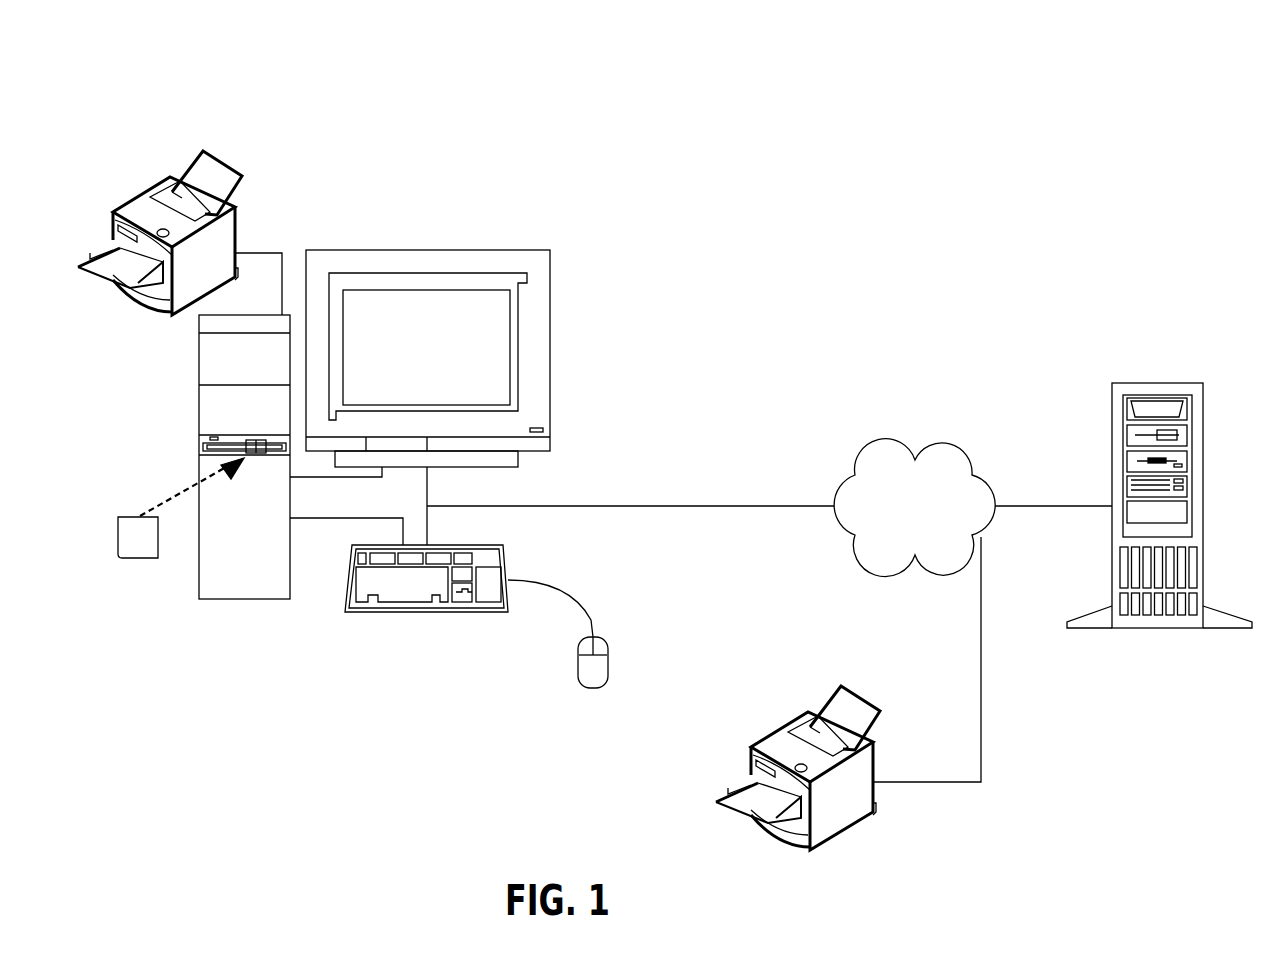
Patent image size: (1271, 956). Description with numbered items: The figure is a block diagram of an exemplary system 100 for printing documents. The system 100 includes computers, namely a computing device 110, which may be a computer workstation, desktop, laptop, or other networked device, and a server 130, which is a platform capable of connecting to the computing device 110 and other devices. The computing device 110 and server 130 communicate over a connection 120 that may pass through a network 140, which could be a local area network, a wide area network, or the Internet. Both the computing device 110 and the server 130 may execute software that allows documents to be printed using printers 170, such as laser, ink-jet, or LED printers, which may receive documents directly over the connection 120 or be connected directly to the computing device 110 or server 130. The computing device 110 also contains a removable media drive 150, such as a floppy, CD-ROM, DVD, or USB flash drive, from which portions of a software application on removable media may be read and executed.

The system 100 is at (259, 59).
The computing device 110 is at (427, 250).
The connection 120 is at (769, 629).
The server 130 is at (1158, 383).
The network 140 is at (937, 517).
The removable media drive 150 is at (181, 526).
The printer 170 is at (72, 262).